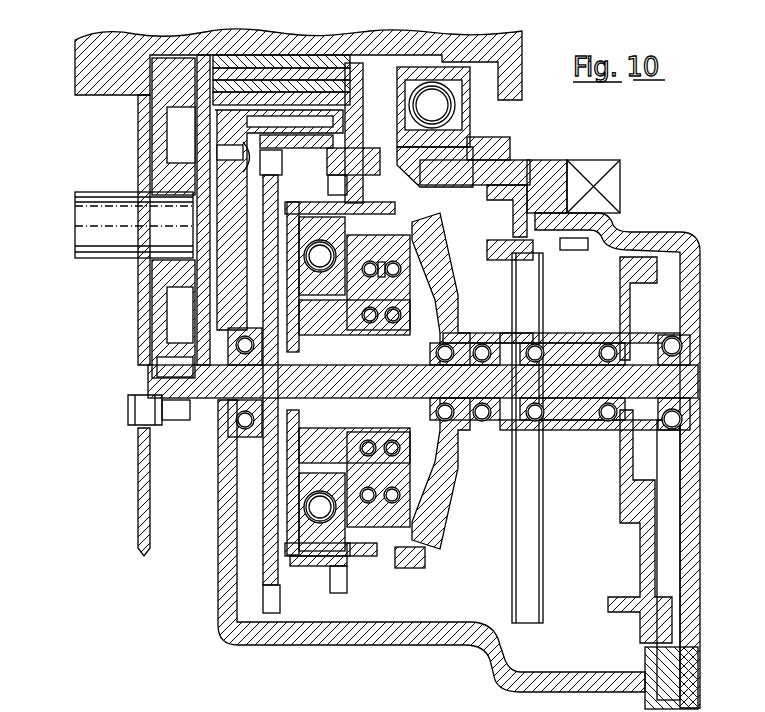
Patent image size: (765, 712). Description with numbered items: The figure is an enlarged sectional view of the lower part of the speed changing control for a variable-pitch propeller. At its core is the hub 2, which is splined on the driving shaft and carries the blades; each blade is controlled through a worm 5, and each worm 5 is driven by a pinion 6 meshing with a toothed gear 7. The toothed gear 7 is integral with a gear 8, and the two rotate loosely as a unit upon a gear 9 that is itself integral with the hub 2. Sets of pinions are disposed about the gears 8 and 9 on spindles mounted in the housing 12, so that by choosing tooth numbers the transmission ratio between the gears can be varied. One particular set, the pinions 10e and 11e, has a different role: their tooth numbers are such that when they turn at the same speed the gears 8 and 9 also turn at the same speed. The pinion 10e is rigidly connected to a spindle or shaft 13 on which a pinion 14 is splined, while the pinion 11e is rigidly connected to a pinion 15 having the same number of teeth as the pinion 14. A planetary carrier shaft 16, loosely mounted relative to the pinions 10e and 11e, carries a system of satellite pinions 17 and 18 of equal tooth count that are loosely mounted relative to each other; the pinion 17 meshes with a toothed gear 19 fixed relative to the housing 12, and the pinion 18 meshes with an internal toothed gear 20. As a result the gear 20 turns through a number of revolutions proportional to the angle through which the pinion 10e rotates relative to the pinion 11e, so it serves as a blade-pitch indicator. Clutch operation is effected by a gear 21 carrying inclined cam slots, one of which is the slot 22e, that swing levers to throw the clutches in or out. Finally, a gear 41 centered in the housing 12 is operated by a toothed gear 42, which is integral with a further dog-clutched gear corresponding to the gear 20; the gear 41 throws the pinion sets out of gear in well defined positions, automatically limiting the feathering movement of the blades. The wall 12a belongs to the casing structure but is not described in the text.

The hub 2 is at (487, 42).
The worm 5 is at (113, 247).
The pinion 6 is at (155, 347).
The toothed gear 7 is at (170, 67).
The gear 8 is at (270, 87).
The gear 9 is at (365, 76).
The pinion 10e is at (277, 187).
The pinion 11e is at (338, 190).
The housing 12 is at (225, 628).
The motor casing wall 12a is at (138, 312).
The spindle or shaft 13 is at (257, 397).
The pinion 14 is at (393, 363).
The pinion 15 is at (352, 363).
The planetary carrier shaft 16 is at (393, 297).
The satellite pinion 17 is at (345, 226).
The satellite pinion 18 is at (407, 242).
The toothed gear 19 is at (352, 547).
The internal toothed gear 20 is at (418, 543).
The gear 21 is at (490, 247).
The plate 22e is at (575, 247).
The gear 41 is at (647, 553).
The toothed gear 42 is at (628, 305).